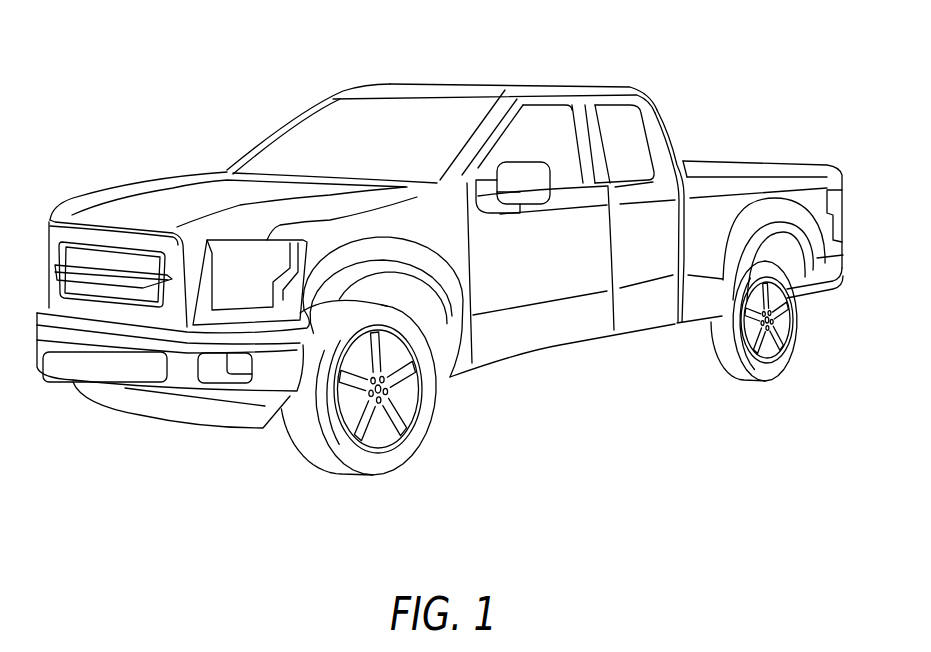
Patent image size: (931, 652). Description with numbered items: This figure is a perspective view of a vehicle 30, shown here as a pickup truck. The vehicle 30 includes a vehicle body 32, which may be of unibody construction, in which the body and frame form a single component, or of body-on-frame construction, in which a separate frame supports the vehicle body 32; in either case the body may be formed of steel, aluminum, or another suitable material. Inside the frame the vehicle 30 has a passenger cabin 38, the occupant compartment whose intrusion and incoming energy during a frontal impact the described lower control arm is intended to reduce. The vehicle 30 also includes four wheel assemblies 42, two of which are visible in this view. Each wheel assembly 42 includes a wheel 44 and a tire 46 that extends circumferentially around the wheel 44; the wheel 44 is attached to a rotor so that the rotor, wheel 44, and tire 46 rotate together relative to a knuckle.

The vehicle 30 is at (166, 107).
The vehicle body 32 is at (110, 187).
The passenger cabin 38 is at (388, 118).
The wheel assembly 42 is at (298, 461).
The wheel 44 is at (377, 453).
The tire 46 is at (420, 440).